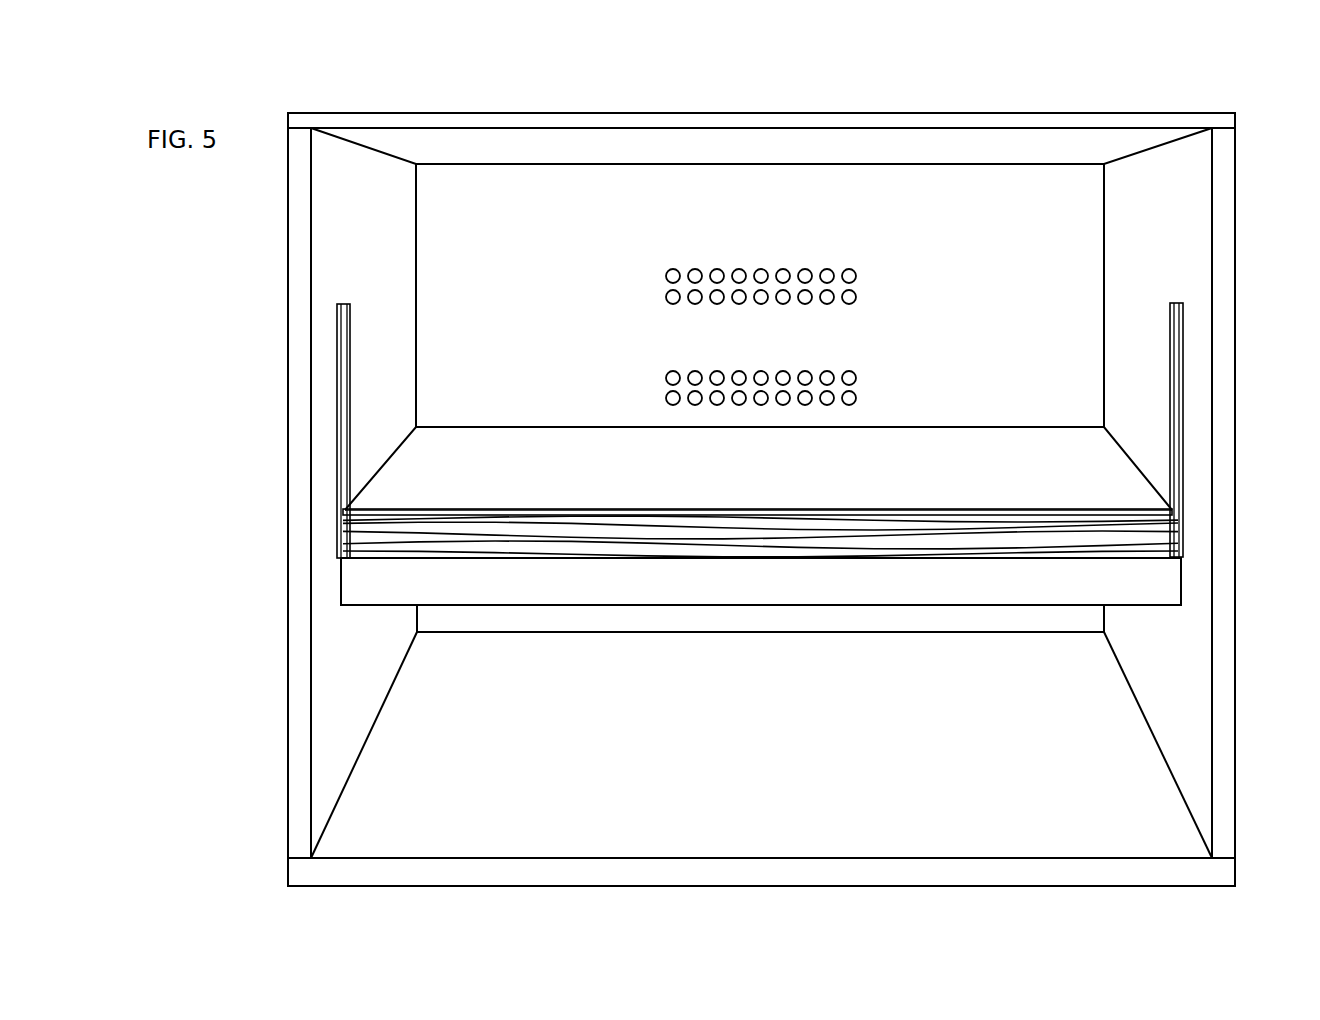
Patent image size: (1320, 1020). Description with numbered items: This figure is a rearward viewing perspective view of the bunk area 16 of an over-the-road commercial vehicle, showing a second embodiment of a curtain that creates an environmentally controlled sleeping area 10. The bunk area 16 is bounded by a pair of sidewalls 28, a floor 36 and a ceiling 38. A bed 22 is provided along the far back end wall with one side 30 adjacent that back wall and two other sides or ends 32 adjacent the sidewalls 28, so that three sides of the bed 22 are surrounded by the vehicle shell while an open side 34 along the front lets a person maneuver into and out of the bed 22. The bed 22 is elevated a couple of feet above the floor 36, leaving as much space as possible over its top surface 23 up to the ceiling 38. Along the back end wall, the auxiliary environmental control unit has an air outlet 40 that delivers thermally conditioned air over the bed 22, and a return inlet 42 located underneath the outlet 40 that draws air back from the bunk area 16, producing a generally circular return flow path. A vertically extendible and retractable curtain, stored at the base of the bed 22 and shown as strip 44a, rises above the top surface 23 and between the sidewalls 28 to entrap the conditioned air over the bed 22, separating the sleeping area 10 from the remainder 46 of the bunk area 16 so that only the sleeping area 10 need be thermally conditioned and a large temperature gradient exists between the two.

The environmentally controlled sleeping area 10 is at (497, 262).
The bunk area 16 is at (436, 745).
The bed 22 is at (917, 548).
The top surface 23 is at (845, 482).
The sidewalls 28 is at (298, 343).
The side 30 is at (958, 426).
The sides or ends 32 is at (396, 458).
The open side 34 is at (762, 558).
The floor 36 is at (780, 870).
The ceiling 38 is at (594, 126).
The air outlet 40 is at (738, 270).
The return inlet 42 is at (853, 374).
The retaining strip 44a is at (395, 515).
The remainder 46 is at (448, 676).